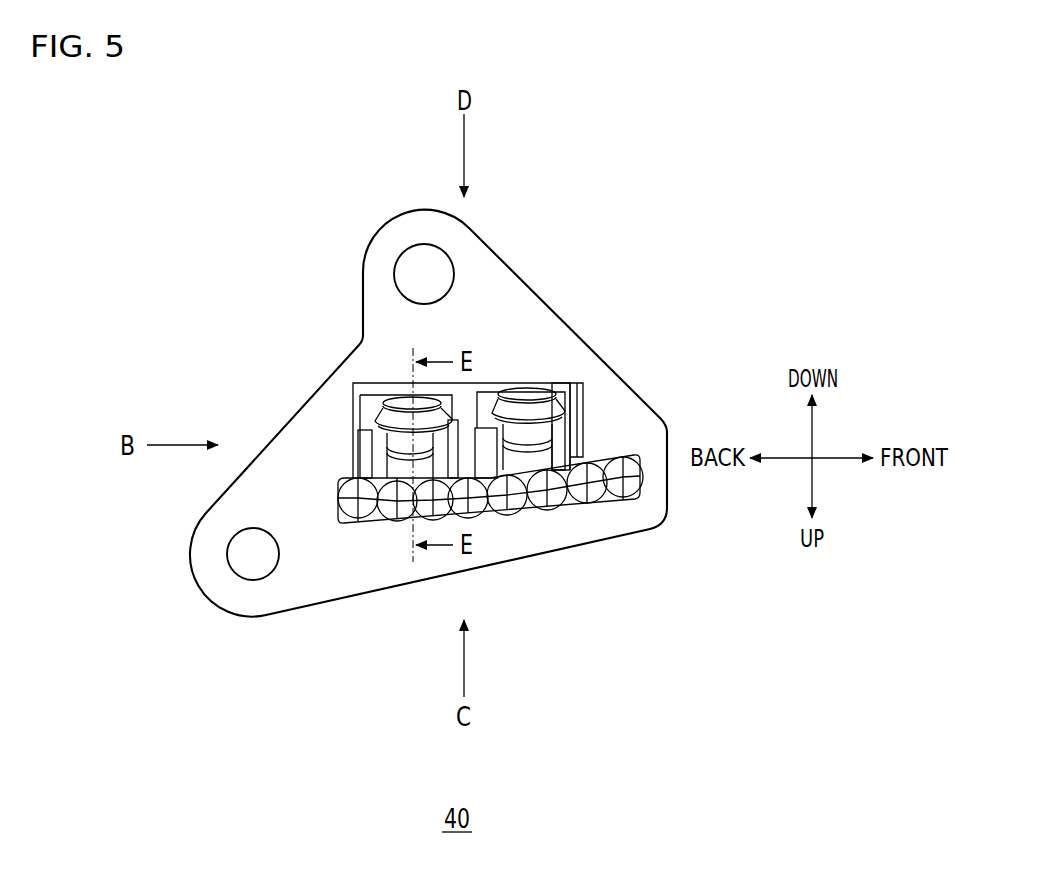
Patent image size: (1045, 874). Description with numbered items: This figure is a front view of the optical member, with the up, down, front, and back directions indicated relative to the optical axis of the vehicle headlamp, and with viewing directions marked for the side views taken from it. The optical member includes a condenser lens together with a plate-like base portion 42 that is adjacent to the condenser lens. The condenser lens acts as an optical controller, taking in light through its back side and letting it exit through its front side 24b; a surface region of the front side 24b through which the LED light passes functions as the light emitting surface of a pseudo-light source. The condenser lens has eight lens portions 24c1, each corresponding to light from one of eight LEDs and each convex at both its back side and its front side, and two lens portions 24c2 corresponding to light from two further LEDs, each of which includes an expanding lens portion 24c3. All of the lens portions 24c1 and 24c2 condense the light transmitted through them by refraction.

The base portion 42 is at (603, 384).
The lens portion 24c2 is at (350, 472).
The expanding lens portion 24c3 is at (381, 417).
The front side 24b is at (543, 510).
The lens portion 24c1 is at (352, 512).